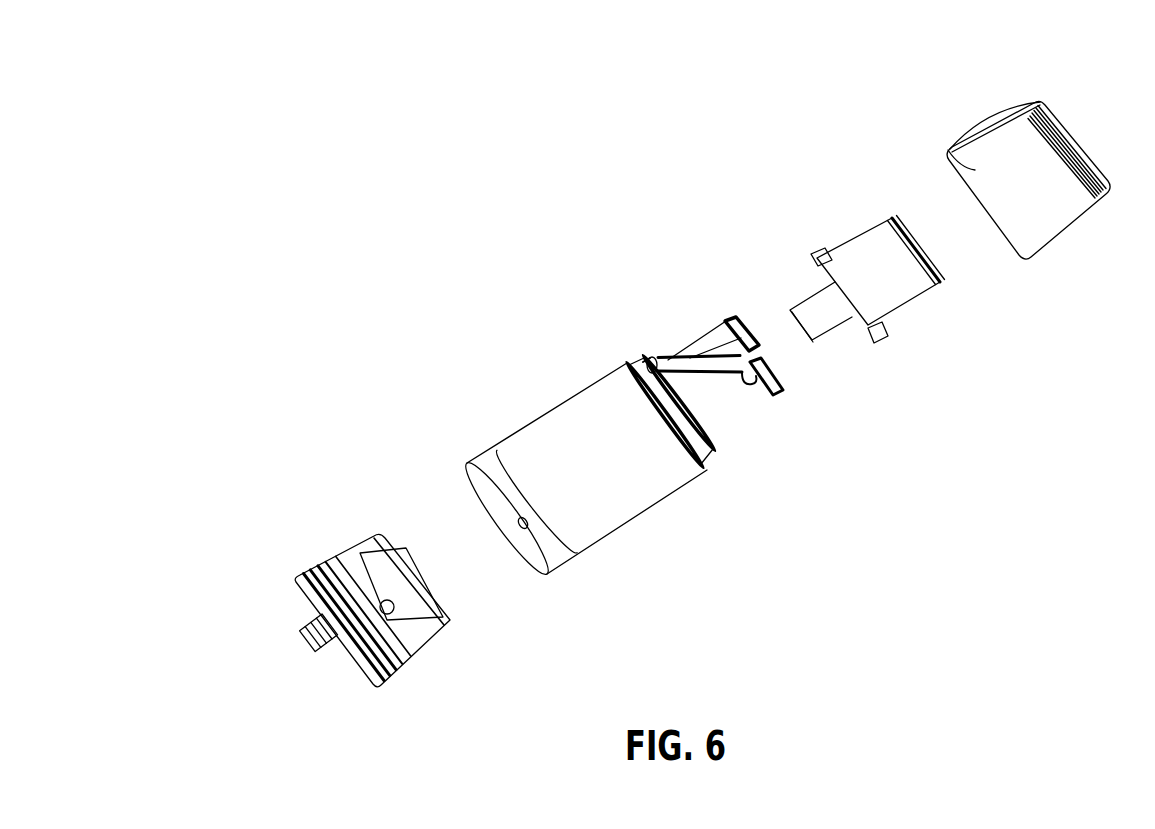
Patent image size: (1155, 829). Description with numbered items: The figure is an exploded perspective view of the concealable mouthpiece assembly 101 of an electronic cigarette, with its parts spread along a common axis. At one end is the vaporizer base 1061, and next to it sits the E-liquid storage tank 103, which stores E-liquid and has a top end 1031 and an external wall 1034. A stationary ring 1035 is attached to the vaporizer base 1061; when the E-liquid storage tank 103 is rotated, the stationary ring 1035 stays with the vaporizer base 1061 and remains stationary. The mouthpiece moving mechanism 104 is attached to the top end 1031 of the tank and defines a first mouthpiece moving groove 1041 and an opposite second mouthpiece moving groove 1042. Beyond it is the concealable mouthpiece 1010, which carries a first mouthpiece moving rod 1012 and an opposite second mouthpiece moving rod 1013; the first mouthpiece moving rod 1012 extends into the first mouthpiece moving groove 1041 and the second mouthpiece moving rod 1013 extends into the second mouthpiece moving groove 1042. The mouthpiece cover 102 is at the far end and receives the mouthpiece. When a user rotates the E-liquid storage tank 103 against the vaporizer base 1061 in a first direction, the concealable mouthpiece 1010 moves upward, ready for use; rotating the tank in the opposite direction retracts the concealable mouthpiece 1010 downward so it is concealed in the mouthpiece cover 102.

The concealable mouthpiece assembly 101 is at (236, 130).
The mouthpiece cover 102 is at (948, 150).
The E-liquid storage tank 103 is at (573, 418).
The mouthpiece moving mechanism 104 is at (716, 340).
The concealable mouthpiece 1010 is at (871, 265).
The first mouthpiece moving rod 1012 is at (815, 256).
The second mouthpiece moving rod 1013 is at (887, 340).
The top end 1031 is at (671, 411).
The external wall 1034 is at (627, 522).
The stationary ring 1035 is at (517, 515).
The first mouthpiece moving groove 1041 is at (688, 365).
The second mouthpiece moving groove 1042 is at (752, 383).
The vaporizer base 1061 is at (300, 595).